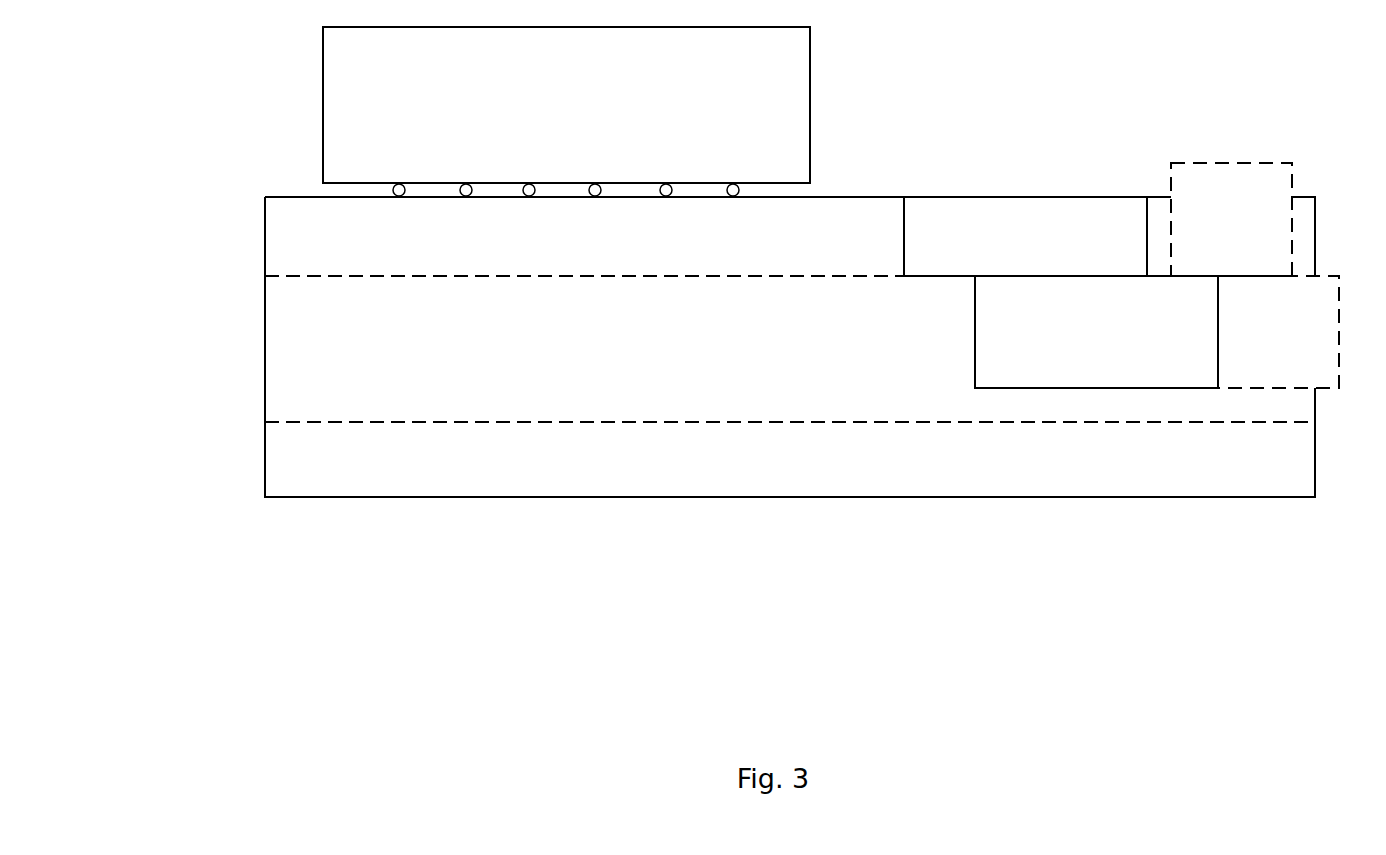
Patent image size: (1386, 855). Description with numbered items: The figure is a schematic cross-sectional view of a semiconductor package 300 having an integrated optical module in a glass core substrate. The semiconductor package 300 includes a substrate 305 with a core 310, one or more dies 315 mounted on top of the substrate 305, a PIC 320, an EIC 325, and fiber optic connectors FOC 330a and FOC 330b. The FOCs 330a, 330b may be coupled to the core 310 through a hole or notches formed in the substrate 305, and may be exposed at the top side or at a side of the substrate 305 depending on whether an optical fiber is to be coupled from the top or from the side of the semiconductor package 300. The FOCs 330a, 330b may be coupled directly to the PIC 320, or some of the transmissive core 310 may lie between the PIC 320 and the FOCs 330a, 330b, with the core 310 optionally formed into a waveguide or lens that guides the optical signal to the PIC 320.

The semiconductor package 300 is at (1173, 673).
The substrate 305 is at (345, 497).
The core 310 is at (265, 334).
The dies 315 is at (646, 120).
The PIC 320 is at (1157, 347).
The EIC 325 is at (1086, 252).
The FOC 330a is at (1194, 257).
The FOC 330b is at (1241, 368).